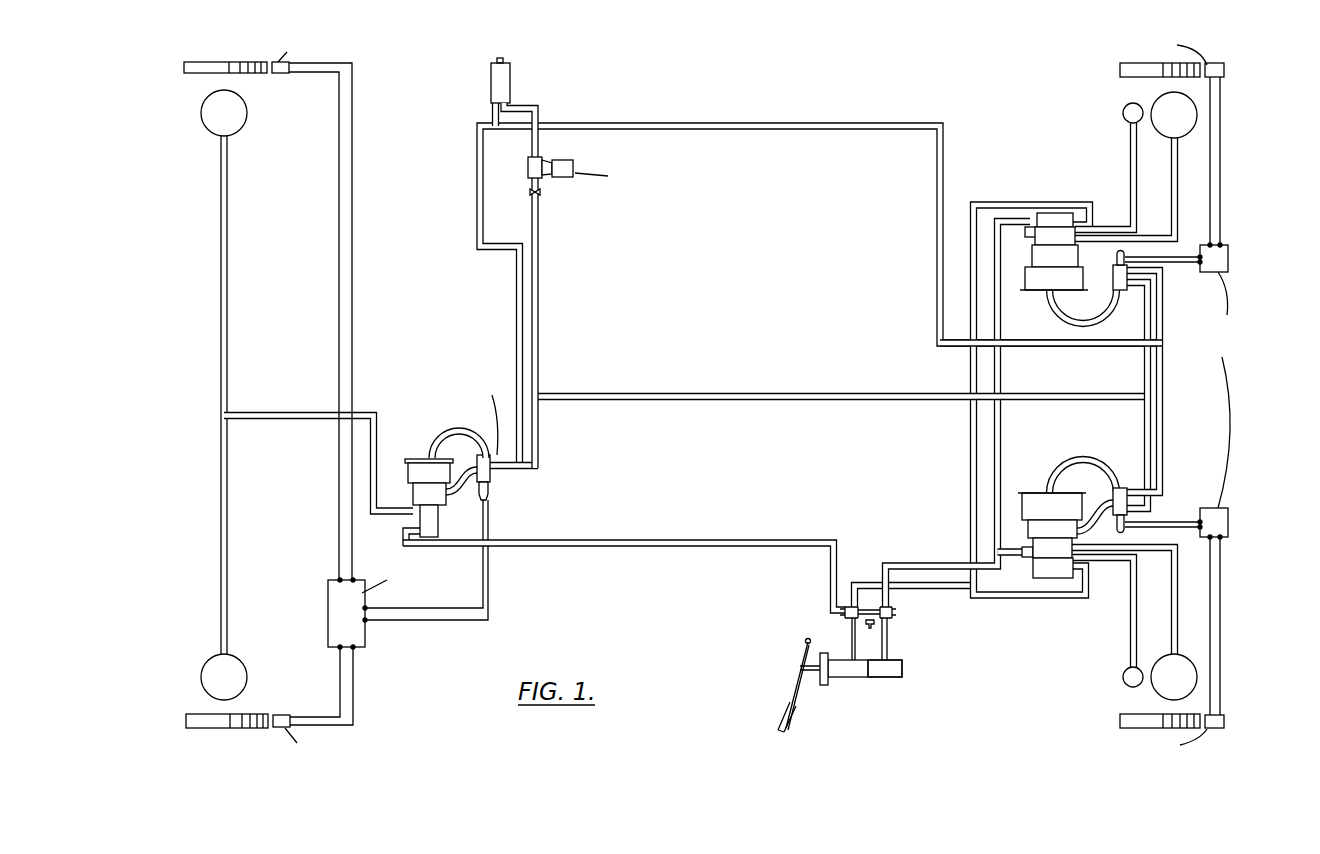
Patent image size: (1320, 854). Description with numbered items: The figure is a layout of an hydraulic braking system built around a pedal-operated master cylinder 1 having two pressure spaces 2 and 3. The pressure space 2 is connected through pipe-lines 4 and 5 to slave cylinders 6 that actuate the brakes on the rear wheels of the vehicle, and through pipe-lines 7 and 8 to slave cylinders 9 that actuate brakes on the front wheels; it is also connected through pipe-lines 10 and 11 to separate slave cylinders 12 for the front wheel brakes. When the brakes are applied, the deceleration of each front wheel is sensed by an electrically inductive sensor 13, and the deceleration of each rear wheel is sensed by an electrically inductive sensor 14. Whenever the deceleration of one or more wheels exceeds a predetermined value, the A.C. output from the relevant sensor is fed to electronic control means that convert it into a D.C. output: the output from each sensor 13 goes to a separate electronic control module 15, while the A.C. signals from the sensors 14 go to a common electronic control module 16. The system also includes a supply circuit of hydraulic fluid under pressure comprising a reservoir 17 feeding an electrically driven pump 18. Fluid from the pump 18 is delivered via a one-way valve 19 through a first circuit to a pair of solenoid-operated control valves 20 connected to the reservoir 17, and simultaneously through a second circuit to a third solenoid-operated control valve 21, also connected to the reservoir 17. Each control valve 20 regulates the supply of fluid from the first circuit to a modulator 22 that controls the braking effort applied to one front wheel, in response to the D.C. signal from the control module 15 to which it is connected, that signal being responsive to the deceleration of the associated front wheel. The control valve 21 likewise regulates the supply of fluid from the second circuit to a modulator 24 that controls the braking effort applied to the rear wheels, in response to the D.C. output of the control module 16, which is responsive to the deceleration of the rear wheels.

The pedal-operated master cylinder 1 is at (796, 665).
The pressure space 2 is at (850, 677).
The pressure space 3 is at (892, 677).
The pipe-line 4 is at (632, 547).
The pipe-line 5 is at (222, 487).
The slave cylinders 6 is at (217, 110).
The pipe-line 7 is at (1002, 422).
The pipe-line 8 is at (1130, 152).
The slave cylinders 9 is at (1123, 112).
The pipe-line 10 is at (970, 428).
The pipe-line 11 is at (1178, 185).
The separate slave cylinders 12 is at (1178, 108).
The electrically inductive sensor 13 is at (1222, 70).
The electrically inductive sensor 14 is at (282, 76).
The electronic control module 15 is at (1229, 258).
The common electronic control module 16 is at (360, 628).
The reservoir 17 is at (500, 87).
The electrically driven pump 18 is at (560, 160).
The one-way valve 19 is at (542, 192).
The solenoid-operated control valves 20 is at (1130, 275).
The third solenoid-operated control valve 21 is at (490, 467).
The modulator 22 is at (1050, 213).
The modulator 24 is at (418, 473).